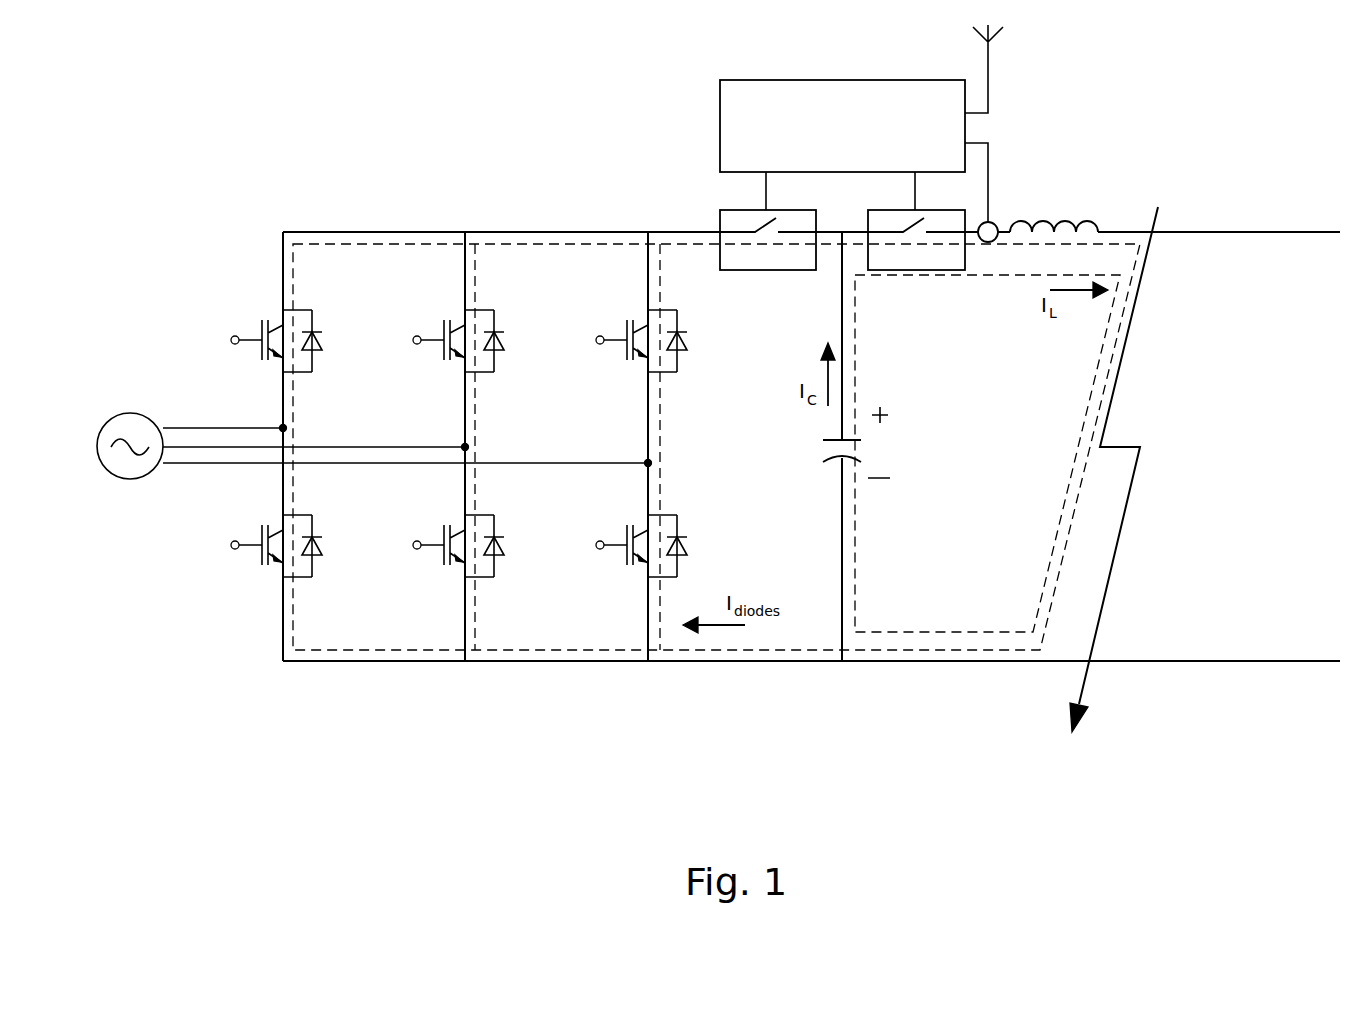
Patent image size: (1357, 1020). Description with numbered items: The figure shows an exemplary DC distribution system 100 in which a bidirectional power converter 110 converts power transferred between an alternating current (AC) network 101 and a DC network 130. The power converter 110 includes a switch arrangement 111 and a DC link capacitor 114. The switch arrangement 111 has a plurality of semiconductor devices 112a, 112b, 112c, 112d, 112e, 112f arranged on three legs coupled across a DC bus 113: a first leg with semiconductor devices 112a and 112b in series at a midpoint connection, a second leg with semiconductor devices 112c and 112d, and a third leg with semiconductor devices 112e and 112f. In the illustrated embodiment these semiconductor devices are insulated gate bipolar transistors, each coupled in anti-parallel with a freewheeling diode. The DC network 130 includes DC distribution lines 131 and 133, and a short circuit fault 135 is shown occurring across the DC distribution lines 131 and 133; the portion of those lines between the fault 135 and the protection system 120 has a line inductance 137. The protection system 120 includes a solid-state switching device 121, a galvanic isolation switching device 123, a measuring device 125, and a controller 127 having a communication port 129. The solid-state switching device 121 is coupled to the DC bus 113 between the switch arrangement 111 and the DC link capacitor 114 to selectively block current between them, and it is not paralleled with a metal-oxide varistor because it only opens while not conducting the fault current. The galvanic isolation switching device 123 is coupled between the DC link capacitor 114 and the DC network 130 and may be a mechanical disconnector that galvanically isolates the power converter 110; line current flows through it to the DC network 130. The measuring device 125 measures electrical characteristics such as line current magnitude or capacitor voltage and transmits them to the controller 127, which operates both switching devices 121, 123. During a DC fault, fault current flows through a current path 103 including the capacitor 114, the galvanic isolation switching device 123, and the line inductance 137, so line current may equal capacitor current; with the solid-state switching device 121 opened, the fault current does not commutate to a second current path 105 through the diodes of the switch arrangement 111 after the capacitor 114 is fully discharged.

The DC distribution system 100 is at (1230, 694).
The alternating current (AC) network 101 is at (148, 412).
The current path 103 is at (1093, 398).
The second current path 105 is at (801, 662).
The bidirectional power converter 110 is at (680, 478).
The switch arrangement 111 is at (253, 630).
The semiconductor device 112a is at (312, 310).
The semiconductor device 112b is at (312, 515).
The semiconductor device 112c is at (494, 310).
The semiconductor device 112d is at (494, 515).
The semiconductor device 112e is at (677, 310).
The semiconductor device 112f is at (677, 515).
The DC bus 113 is at (662, 224).
The DC link capacitor 114 is at (828, 451).
The protection system 120 is at (889, 119).
The solid-state switching device 121 is at (797, 272).
The galvanic isolation switching device 123 is at (940, 272).
The measuring device 125 is at (992, 221).
The controller 127 is at (893, 80).
The communication port 129 is at (994, 72).
The DC network 130 is at (1230, 289).
The DC distribution line 131 is at (1242, 231).
The DC distribution line 133 is at (1242, 658).
The short circuit fault 135 is at (1112, 398).
The line inductance 137 is at (1084, 219).